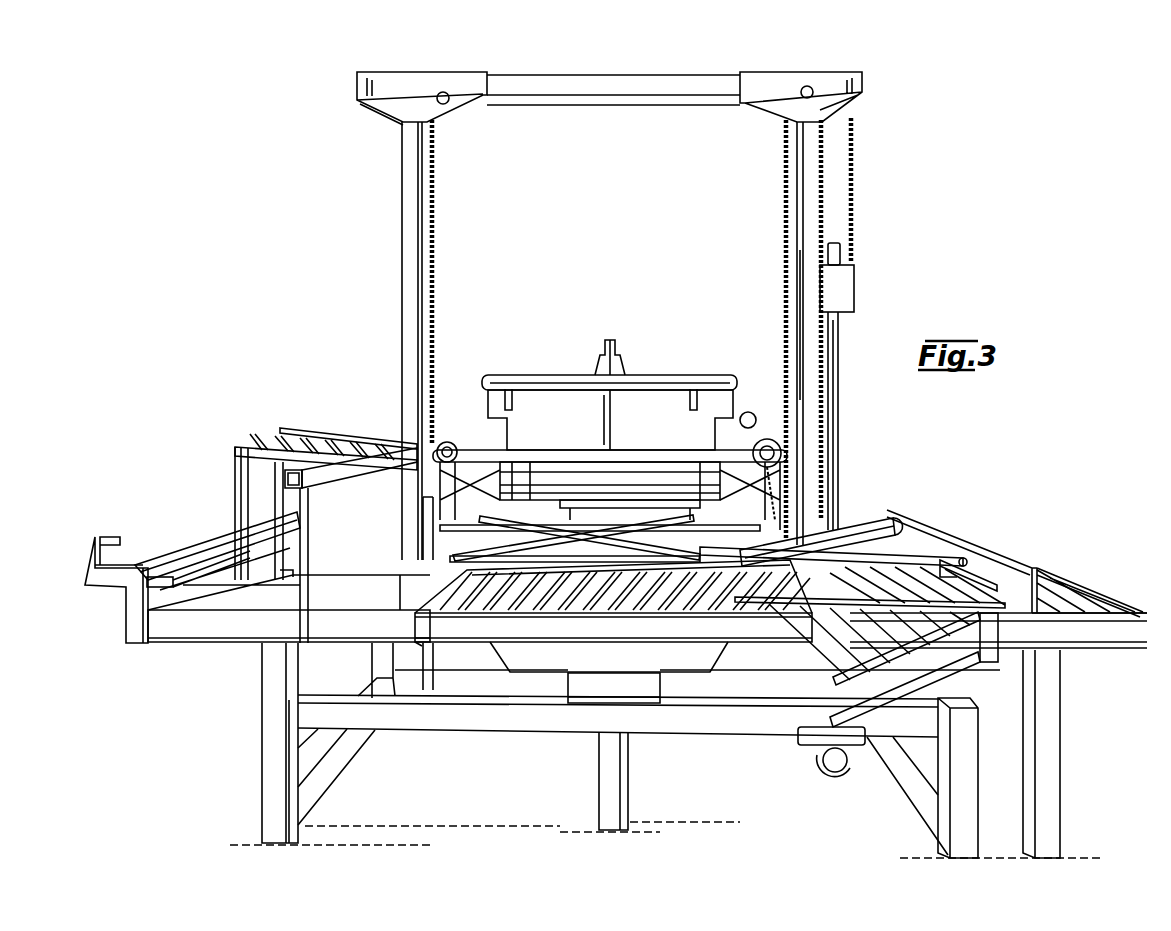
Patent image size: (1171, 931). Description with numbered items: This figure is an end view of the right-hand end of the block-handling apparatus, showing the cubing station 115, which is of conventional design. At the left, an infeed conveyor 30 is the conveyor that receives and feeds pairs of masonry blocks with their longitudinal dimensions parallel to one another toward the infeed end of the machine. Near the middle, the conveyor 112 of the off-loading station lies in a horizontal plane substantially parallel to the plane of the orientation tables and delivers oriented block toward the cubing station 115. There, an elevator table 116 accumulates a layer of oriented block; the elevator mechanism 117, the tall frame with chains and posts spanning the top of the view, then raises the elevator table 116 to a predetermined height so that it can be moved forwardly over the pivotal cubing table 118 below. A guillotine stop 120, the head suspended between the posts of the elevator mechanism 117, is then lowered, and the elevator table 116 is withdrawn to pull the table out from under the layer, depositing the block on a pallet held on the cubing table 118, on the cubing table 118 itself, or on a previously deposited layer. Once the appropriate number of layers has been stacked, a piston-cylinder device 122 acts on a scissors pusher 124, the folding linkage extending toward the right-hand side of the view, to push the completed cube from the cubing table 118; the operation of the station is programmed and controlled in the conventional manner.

The elevator mechanism 117 is at (735, 62).
The guillotine stop 120 is at (658, 407).
The infeed conveyor 30 is at (310, 445).
The piston-cylinder device 122 is at (148, 543).
The cubing station 115 is at (233, 655).
The cubing table 118 is at (485, 628).
The elevator table 116 is at (548, 533).
The conveyor 112 is at (632, 497).
The scissors pusher 124 is at (865, 517).